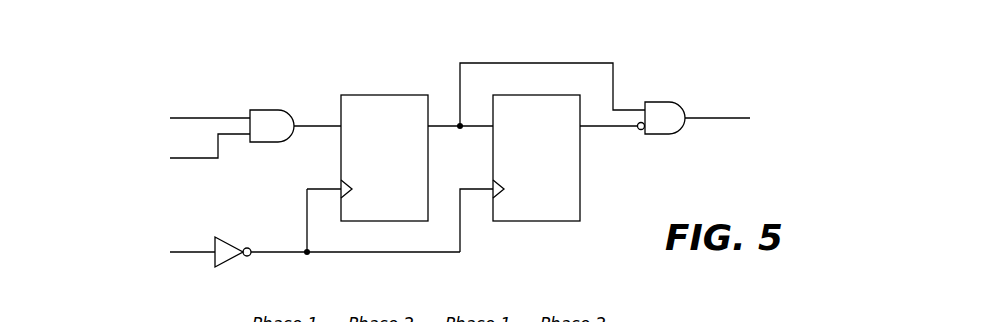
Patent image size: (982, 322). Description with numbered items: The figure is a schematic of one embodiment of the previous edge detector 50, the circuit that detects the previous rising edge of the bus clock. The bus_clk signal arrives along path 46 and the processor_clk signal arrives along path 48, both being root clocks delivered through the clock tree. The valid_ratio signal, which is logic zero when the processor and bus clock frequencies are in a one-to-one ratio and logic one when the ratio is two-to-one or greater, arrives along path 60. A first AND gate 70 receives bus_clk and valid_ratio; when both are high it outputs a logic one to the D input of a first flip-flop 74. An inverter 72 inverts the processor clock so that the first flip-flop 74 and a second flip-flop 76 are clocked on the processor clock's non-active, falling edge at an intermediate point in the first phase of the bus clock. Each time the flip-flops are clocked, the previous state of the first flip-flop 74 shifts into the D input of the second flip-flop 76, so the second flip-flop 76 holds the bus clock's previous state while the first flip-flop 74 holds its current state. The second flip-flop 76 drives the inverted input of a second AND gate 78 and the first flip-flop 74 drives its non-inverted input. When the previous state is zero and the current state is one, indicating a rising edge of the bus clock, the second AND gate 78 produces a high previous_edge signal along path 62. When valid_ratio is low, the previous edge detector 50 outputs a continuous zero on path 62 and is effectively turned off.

The previous edge detector 50 is at (275, 42).
The path 46 is at (210, 118).
The path 60 is at (203, 158).
The first AND gate 70 is at (265, 110).
The first flip-flop 74 is at (368, 95).
The second flip-flop 76 is at (522, 221).
The second AND gate 78 is at (658, 102).
The path 62 is at (712, 118).
The path 48 is at (195, 252).
The inverter 72 is at (222, 237).